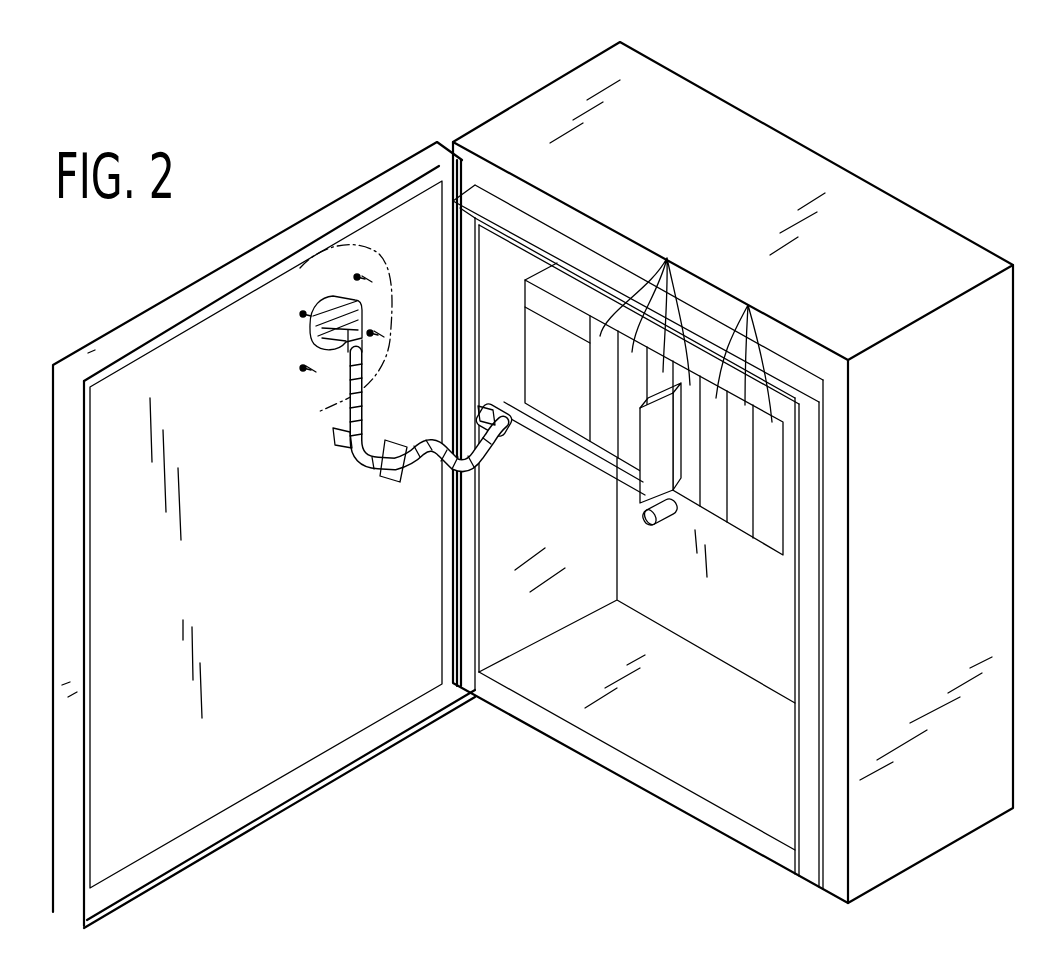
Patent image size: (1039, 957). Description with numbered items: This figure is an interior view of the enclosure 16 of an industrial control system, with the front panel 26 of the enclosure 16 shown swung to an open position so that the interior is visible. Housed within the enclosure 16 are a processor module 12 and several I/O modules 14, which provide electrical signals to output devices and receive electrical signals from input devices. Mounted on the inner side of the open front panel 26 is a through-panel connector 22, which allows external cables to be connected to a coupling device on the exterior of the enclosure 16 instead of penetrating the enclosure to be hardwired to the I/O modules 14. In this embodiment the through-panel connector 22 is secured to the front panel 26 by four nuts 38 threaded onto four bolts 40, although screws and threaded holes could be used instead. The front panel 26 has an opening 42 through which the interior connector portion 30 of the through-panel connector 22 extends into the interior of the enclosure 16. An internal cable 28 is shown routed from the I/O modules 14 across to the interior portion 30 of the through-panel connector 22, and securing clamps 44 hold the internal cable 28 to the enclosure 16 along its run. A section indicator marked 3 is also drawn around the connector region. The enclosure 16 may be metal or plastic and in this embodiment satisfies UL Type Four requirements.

The processor module 12 is at (554, 345).
The I/O modules 14 is at (667, 258).
The enclosure 16 is at (817, 152).
The through-panel connector 22 is at (333, 298).
The front panel 26 is at (352, 205).
The internal cable 28 is at (498, 445).
The interior connector portion 30 is at (298, 350).
The nuts 38 is at (357, 276).
The bolts 40 is at (375, 280).
The opening 42 is at (299, 306).
The securing clamps 44 is at (340, 448).
The section line 3- 3 is at (302, 266).